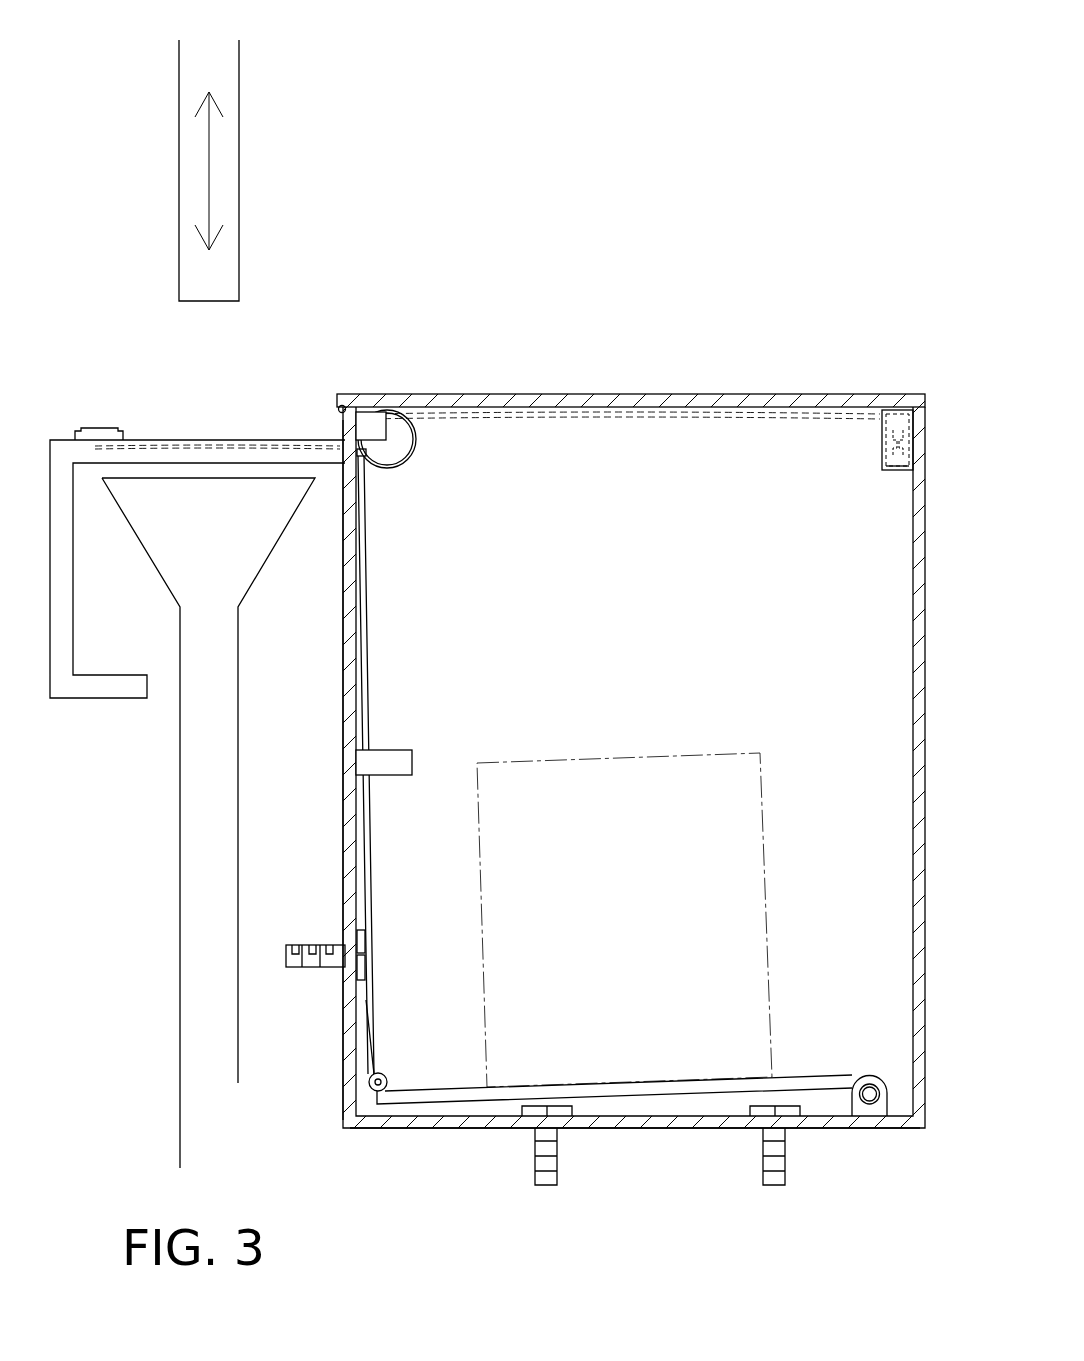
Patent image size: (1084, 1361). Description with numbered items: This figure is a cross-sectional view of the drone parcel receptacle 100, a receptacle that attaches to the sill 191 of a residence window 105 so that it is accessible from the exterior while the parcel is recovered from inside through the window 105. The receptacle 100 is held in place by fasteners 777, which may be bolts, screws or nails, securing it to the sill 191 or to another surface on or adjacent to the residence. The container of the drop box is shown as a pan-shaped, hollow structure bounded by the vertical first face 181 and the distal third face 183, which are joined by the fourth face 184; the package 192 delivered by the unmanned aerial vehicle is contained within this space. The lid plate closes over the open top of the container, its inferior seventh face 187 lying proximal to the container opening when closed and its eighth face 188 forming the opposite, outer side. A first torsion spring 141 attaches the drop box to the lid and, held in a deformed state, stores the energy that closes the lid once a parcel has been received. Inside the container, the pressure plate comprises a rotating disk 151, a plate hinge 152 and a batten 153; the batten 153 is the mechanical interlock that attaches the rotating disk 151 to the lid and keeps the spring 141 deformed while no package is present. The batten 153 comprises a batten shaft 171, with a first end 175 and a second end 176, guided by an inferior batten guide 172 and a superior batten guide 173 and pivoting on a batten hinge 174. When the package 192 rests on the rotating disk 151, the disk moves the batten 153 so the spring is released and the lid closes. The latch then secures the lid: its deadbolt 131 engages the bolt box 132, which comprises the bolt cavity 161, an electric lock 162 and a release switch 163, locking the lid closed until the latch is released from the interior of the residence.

The drone parcel receptacle 100 is at (646, 158).
The window 105 is at (239, 235).
The deadbolt 131 is at (897, 422).
The bolt box 132 is at (838, 469).
The first torsion spring 141 is at (414, 455).
The rotating disk 151 is at (700, 1090).
The plate hinge 152 is at (868, 1078).
The batten 153 is at (563, 975).
The bolt cavity 161 is at (900, 463).
The electric lock 162 is at (903, 470).
The release switch 163 is at (93, 428).
The batten shaft 171 is at (374, 607).
The inferior batten guide 172 is at (410, 757).
The superior batten guide 173 is at (372, 432).
The batten hinge 174 is at (390, 1077).
The first end 175 is at (380, 1067).
The second end 176 is at (363, 457).
The first face 181 is at (928, 805).
The third face 183 is at (335, 1045).
The fourth face 184 is at (505, 1128).
The seventh face 187 is at (598, 420).
The eighth face 188 is at (532, 394).
The window sill 191 is at (277, 543).
The package 192 is at (633, 755).
The fasteners 777 is at (312, 945).